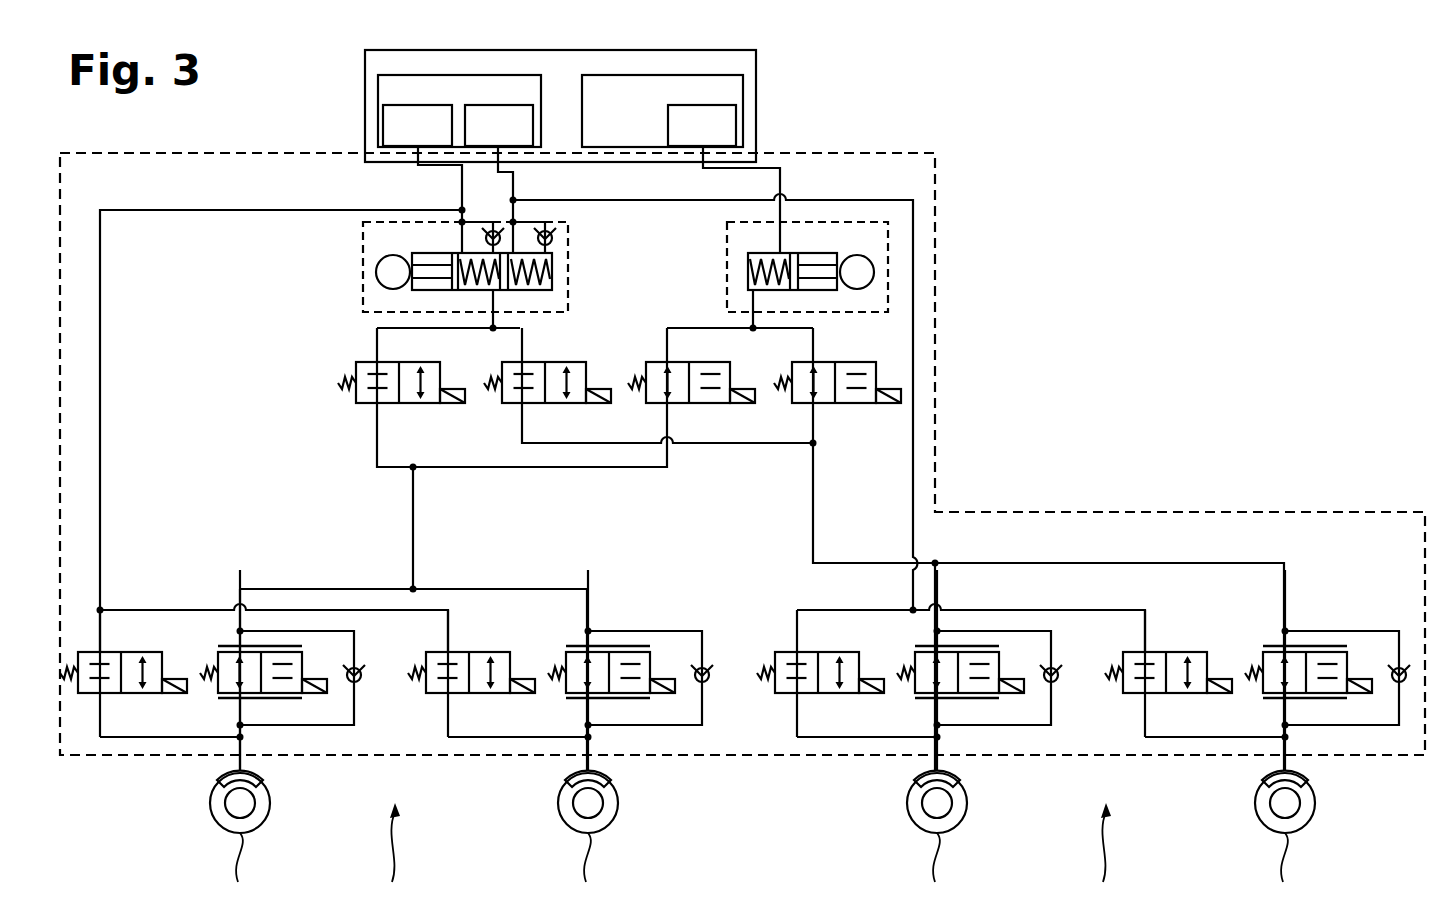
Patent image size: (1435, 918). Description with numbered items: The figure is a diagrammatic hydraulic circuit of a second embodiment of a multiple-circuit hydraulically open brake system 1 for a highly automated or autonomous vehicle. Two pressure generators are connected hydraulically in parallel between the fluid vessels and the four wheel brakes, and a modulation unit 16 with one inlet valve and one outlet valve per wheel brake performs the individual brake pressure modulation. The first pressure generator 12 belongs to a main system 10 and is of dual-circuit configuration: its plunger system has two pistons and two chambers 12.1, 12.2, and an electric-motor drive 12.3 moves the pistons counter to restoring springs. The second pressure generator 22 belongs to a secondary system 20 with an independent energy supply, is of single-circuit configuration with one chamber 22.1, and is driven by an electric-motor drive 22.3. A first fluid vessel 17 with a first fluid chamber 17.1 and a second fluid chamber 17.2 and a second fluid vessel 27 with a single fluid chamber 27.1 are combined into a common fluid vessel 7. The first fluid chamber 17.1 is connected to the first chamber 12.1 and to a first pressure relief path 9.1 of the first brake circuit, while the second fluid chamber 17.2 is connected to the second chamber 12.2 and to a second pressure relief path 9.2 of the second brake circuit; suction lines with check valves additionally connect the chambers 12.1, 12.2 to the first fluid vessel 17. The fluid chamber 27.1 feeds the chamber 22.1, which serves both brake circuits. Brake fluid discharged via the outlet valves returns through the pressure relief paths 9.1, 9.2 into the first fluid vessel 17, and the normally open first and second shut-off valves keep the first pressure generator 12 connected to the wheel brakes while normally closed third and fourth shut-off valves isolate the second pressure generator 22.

The multiple-circuit hydraulically open brake system 1 is at (1237, 233).
The common fluid vessel 7 is at (365, 120).
The first pressure relief path 9.1 is at (100, 526).
The second pressure relief path 9.2 is at (877, 198).
The main system 10 is at (1152, 512).
The first pressure generator 12 is at (363, 300).
The first chamber 12.1 is at (460, 254).
The second chamber 12.2 is at (553, 258).
The drive 12.3 is at (376, 272).
The modulation unit 16 is at (1200, 363).
The first fluid vessel 17 is at (378, 98).
The first fluid chamber 17.1 is at (383, 125).
The second fluid chamber 17.2 is at (535, 118).
The secondary system 20 is at (888, 237).
The second pressure generator 22 is at (880, 313).
The chamber 22.1 is at (786, 250).
The drive 22.3 is at (875, 272).
The second fluid vessel 27 is at (713, 75).
The fluid chamber 27.1 is at (736, 108).